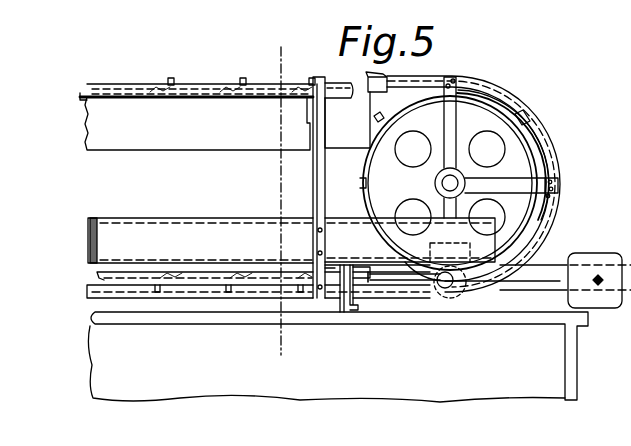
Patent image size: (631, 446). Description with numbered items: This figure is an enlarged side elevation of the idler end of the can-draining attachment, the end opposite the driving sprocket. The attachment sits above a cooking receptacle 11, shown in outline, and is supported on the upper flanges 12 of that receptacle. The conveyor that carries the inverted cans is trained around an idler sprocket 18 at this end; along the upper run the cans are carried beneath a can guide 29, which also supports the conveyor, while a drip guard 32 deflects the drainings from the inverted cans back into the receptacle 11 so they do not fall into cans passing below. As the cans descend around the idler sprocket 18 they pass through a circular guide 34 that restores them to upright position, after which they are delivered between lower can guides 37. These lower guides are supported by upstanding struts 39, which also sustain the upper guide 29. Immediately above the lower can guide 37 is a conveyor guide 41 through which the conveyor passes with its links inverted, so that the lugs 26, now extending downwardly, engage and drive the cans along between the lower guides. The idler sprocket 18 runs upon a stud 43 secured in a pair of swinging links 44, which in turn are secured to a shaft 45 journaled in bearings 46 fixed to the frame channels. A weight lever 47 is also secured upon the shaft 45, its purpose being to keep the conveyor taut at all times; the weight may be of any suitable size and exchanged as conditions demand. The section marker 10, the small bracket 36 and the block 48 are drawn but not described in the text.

The section line 10 is at (300, 44).
The cooking receptacle 11 is at (566, 360).
The upper flanges 12 is at (360, 305).
The idler sprocket 18 is at (486, 126).
The lugs 26 is at (173, 82).
The can guide 29 is at (106, 87).
The drip guard 32 is at (125, 145).
The circular guide 34 is at (473, 86).
The clip 36 is at (522, 119).
The lower can guide 37 is at (106, 288).
The upstanding struts 39 is at (313, 187).
The conveyor guide 41 is at (97, 277).
The stud 43 is at (433, 184).
The swinging links 44 is at (440, 214).
The shaft 45 is at (451, 290).
The bearings 46 is at (440, 293).
The weight lever 47 is at (544, 270).
The block 48 is at (594, 258).